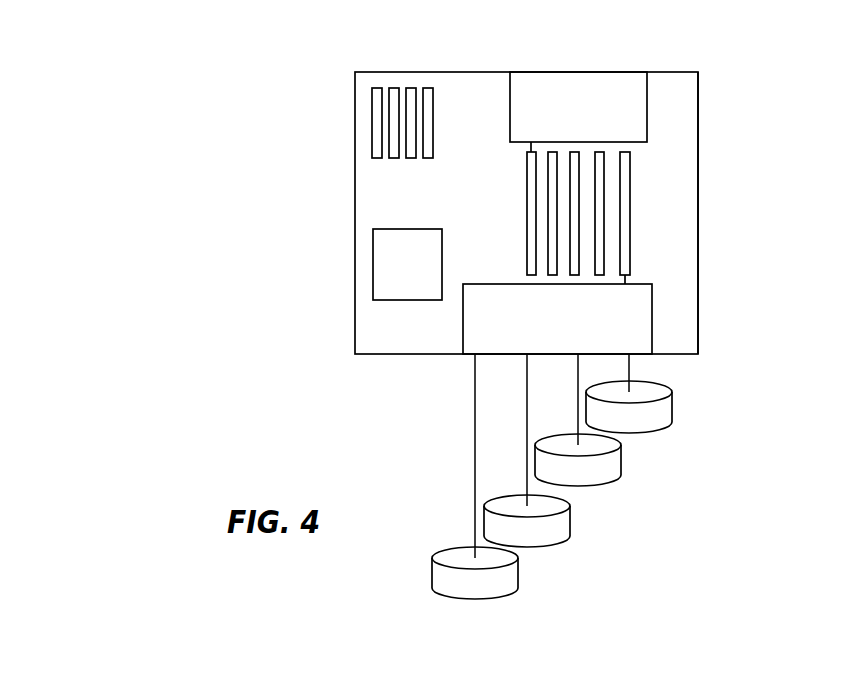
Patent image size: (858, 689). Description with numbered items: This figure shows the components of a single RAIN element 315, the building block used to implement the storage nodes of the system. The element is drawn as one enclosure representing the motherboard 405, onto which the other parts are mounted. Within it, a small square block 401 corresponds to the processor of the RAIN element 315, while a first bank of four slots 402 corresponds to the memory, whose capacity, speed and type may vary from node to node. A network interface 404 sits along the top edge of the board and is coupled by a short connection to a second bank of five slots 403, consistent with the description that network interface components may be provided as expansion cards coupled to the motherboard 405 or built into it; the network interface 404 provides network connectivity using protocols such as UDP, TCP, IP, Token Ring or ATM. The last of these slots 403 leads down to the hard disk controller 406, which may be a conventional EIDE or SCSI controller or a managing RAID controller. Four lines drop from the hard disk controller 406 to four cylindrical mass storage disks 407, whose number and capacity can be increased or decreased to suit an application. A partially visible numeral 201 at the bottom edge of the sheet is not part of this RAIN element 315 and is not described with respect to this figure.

The RAIN element 315 is at (722, 68).
The processor 401 is at (386, 257).
The memory slots 402 is at (371, 117).
The expansion slots 403 is at (526, 198).
The network interface 404 is at (528, 90).
The motherboard 405 is at (690, 203).
The hard disk controller 406 is at (645, 318).
The disk 407 is at (665, 405).
The adjacent sheet numeral (clipped) 201 is at (770, 684).